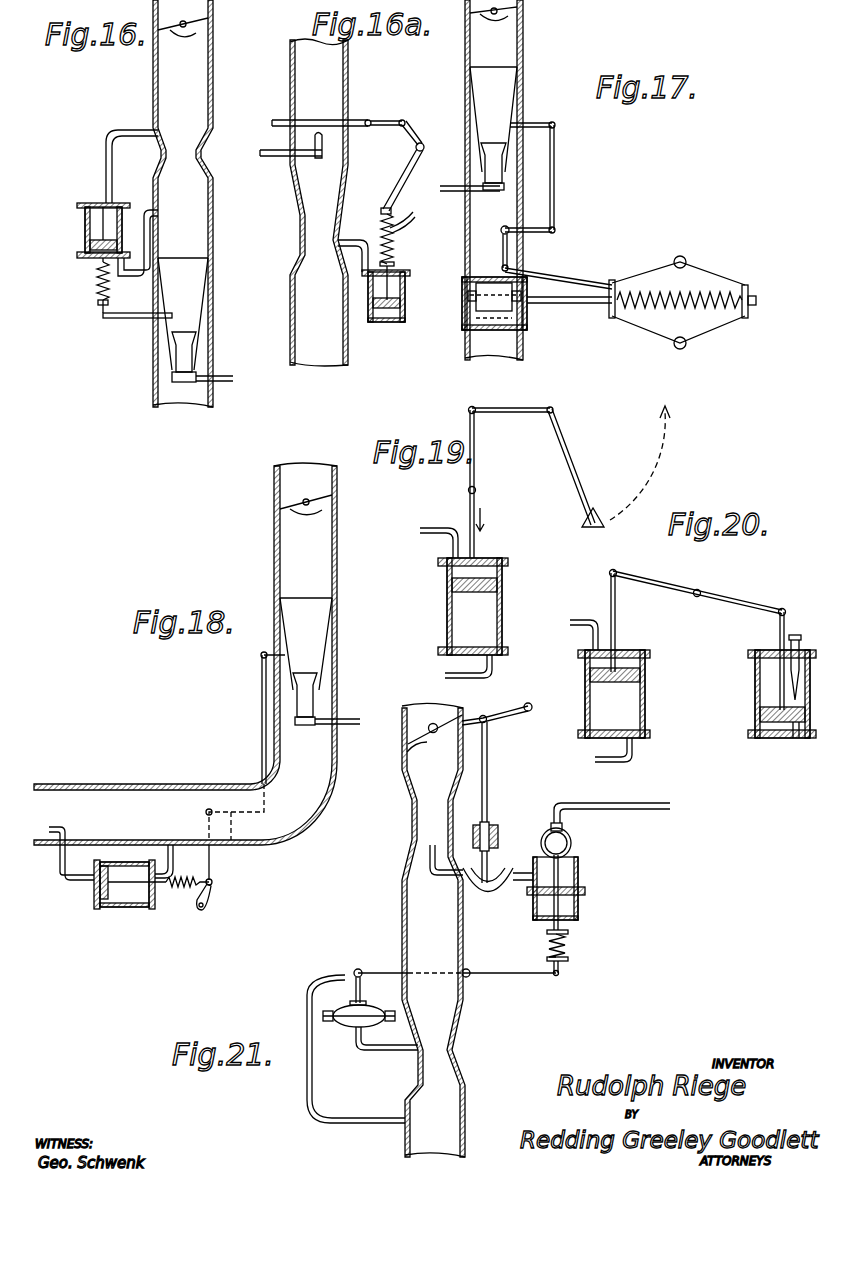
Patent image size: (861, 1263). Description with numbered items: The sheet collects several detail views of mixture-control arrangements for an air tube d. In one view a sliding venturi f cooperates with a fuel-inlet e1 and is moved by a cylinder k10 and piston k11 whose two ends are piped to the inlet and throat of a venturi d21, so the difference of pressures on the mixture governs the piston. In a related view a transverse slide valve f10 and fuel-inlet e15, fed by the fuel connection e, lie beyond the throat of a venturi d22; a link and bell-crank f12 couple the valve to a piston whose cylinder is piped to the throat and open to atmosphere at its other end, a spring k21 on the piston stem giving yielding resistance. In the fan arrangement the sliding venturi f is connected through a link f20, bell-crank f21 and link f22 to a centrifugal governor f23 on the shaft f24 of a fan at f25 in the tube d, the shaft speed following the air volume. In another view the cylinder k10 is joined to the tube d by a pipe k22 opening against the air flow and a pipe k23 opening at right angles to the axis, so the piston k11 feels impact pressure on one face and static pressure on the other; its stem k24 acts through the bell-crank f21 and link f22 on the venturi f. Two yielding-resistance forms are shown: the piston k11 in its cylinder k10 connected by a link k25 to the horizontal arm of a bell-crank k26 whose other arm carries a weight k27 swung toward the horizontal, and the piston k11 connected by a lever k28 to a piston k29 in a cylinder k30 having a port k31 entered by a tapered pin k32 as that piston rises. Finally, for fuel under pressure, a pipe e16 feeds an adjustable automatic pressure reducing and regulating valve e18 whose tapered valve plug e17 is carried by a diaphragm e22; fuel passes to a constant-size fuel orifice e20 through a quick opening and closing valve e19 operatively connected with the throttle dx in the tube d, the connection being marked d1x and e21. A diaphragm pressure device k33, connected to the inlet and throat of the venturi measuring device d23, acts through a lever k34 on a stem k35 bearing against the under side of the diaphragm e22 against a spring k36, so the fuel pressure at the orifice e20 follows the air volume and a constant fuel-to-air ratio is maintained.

In FIG. 16, the tube d is at (213, 253).
In FIG. 16A, the tube d is at (350, 350).
In FIG. 17, the tube d is at (530, 337).
In FIG. 18, the tube d is at (160, 809).
In FIG. 21, the tube d is at (407, 923).
In FIG. 16, the throttle dx is at (198, 32).
In FIG. 17, the throttle dx is at (522, 13).
In FIG. 18, the throttle dx is at (336, 500).
In FIG. 21, the throttle dx is at (408, 752).
In FIG. 16, the venturi d21 is at (187, 115).
In FIG. 16A, the venturi d22 is at (318, 223).
In FIG. 21, the pipe constriction d23 is at (440, 1030).
In FIG. 21, the damper lever d1x is at (497, 716).
In FIG. 16, the cylinder k10 is at (92, 217).
In FIG. 16A, the cylinder k10 is at (407, 317).
In FIG. 18, the cylinder k10 is at (135, 893).
In FIG. 19, the cylinder k10 is at (490, 640).
In FIG. 20, the cylinder k10 is at (625, 725).
In FIG. 16, the piston k11 is at (87, 247).
In FIG. 16A, the piston k11 is at (394, 302).
In FIG. 18, the piston k11 is at (98, 891).
In FIG. 19, the piston k11 is at (502, 585).
In FIG. 20, the piston k11 is at (645, 672).
In FIG. 16A, the spring k21 is at (394, 238).
In FIG. 18, the pipe k22 is at (65, 841).
In FIG. 18, the pipe k23 is at (174, 852).
In FIG. 18, the stem k24 is at (207, 885).
In FIG. 19, the link k25 is at (475, 452).
In FIG. 19, the bell-crank k26 is at (537, 410).
In FIG. 19, the weight k27 is at (582, 519).
In FIG. 20, the lever k28 is at (735, 605).
In FIG. 20, the piston k29 is at (760, 717).
In FIG. 20, the cylinder k30 is at (762, 668).
In FIG. 20, the port k31 is at (795, 745).
In FIG. 20, the tapered pin k32 is at (793, 680).
In FIG. 21, the diaphragm pressure device k33 is at (350, 1030).
In FIG. 21, the lever k34 is at (513, 965).
In FIG. 21, the stem k35 is at (563, 925).
In FIG. 21, the spring k36 is at (565, 953).
In FIG. 16, the sliding venturi f is at (208, 290).
In FIG. 17, the sliding venturi f is at (507, 110).
In FIG. 18, the sliding venturi f is at (333, 626).
In FIG. 16A, the transverse slide valve f10 is at (312, 125).
In FIG. 16A, the bell-crank f12 is at (416, 148).
In FIG. 17, the link f20 is at (557, 165).
In FIG. 17, the bell-crank f21 is at (557, 223).
In FIG. 18, the bell-crank f21 is at (231, 835).
In FIG. 17, the link f22 is at (567, 273).
In FIG. 18, the link f22 is at (263, 725).
In FIG. 17, the centrifugal governor f23 is at (693, 267).
In FIG. 17, the shaft f24 is at (583, 307).
In FIG. 17, the fan f25 is at (470, 330).
In FIG. 16A, the rod e is at (268, 152).
In FIG. 16, the fuel-inlet e1 is at (197, 340).
In FIG. 17, the fuel-inlet e1 is at (495, 160).
In FIG. 18, the fuel-inlet e1 is at (320, 693).
In FIG. 16A, the fuel-inlet e15 is at (318, 147).
In FIG. 21, the pipe e16 is at (638, 790).
In FIG. 21, the tapered valve plug e17 is at (572, 853).
In FIG. 21, the pressure reducing and regulating valve e18 is at (578, 867).
In FIG. 21, the quick opening and closing valve e19 is at (492, 870).
In FIG. 21, the fuel orifice e20 is at (428, 852).
In FIG. 21, the rod e21 is at (490, 815).
In FIG. 21, the diaphragm e22 is at (585, 890).